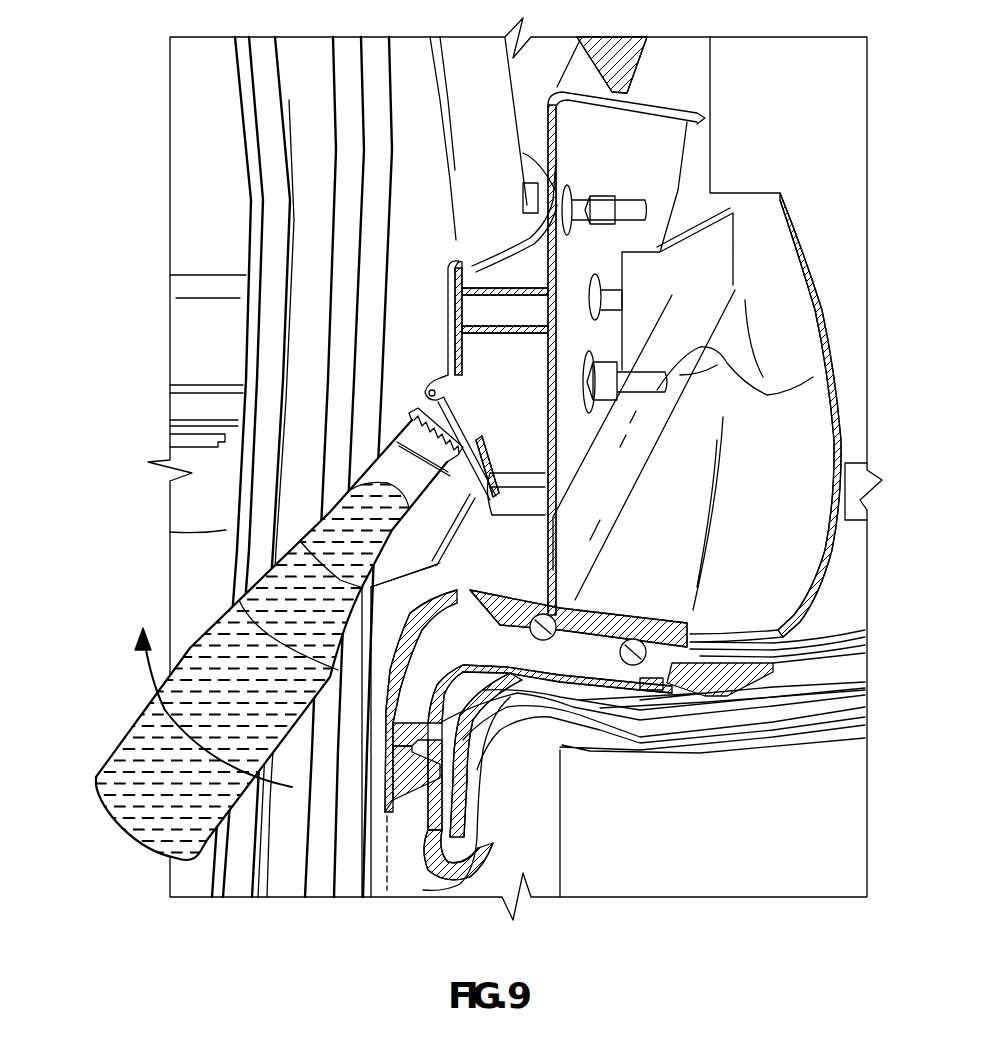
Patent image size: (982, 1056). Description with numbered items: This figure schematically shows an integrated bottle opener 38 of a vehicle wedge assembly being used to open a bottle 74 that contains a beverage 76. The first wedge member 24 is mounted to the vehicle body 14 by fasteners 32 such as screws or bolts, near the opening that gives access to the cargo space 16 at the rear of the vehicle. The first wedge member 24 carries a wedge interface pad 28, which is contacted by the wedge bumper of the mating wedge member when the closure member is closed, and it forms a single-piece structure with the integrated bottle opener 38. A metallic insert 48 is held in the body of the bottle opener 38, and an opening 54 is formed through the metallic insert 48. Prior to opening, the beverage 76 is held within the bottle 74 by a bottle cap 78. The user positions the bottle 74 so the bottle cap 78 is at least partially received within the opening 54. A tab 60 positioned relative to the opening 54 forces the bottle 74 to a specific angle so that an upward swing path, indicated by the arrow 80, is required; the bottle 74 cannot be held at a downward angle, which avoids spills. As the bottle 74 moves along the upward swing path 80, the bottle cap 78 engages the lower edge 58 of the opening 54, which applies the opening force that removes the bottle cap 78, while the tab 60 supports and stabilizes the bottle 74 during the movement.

The vehicle body 14 is at (745, 493).
The cargo space 16 is at (177, 284).
The first wedge member 24 is at (437, 258).
The wedge interface pad 28 is at (463, 318).
The fasteners 32 is at (602, 208).
The integrated bottle opener 38 is at (448, 480).
The metallic insert 48 is at (470, 505).
The opening 54 is at (477, 443).
The lower edge 58 is at (397, 442).
The tab 60 is at (458, 418).
The bottle 74 is at (96, 777).
The beverage 76 is at (340, 515).
The bottle cap 78 is at (410, 416).
The arrow 80 is at (143, 677).